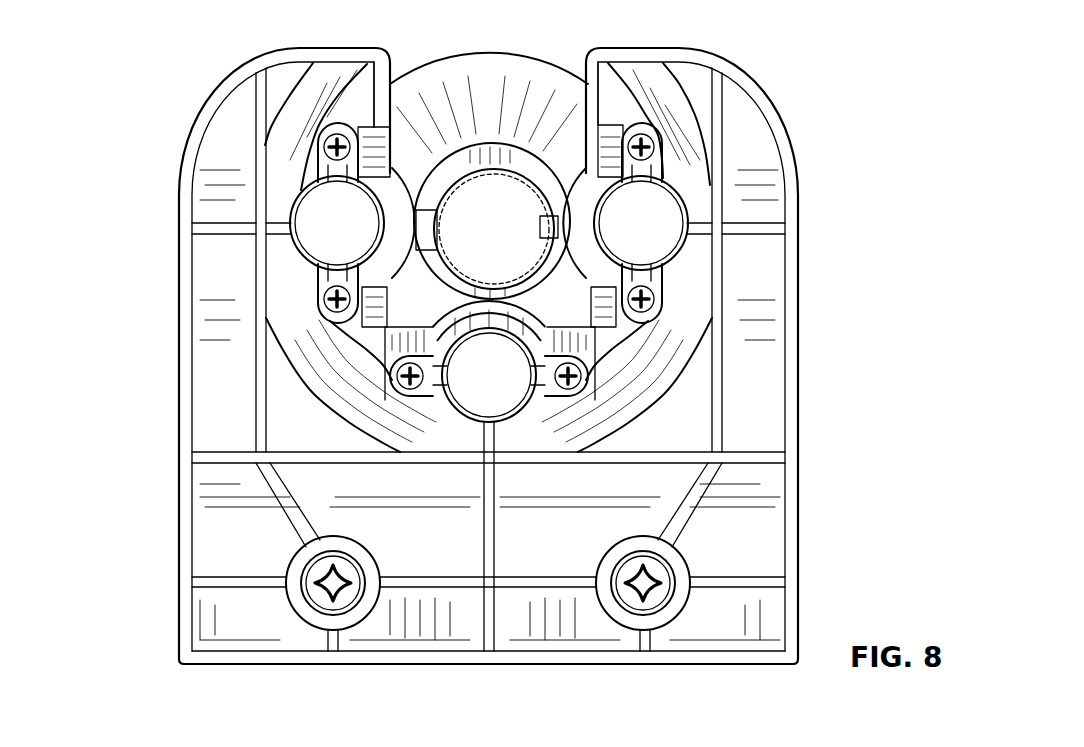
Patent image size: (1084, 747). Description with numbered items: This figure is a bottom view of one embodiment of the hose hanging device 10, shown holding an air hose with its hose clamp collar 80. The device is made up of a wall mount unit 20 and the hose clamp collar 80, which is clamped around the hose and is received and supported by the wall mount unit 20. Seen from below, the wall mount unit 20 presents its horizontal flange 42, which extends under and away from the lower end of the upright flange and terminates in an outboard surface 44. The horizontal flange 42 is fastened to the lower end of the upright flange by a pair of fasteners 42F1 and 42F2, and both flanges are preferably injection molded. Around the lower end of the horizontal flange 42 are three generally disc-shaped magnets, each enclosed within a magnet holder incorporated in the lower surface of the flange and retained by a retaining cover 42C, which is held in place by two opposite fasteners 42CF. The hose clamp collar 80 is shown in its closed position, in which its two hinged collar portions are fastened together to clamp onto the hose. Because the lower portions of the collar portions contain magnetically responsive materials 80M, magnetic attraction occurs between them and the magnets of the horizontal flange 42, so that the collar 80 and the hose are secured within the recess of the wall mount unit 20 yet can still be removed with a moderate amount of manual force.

The hose hanging device 10 is at (773, 18).
The wall mount unit 20 is at (150, 371).
The horizontal flange 42 is at (797, 290).
The retaining cover 42C is at (357, 243).
The fasteners 42CF is at (318, 185).
The fastener 42F1 is at (660, 570).
The fastener 42F2 is at (313, 570).
The outboard surface 44 is at (646, 45).
The hose clamp collar 80 is at (577, 10).
The magnetically responsive materials 80M is at (470, 96).